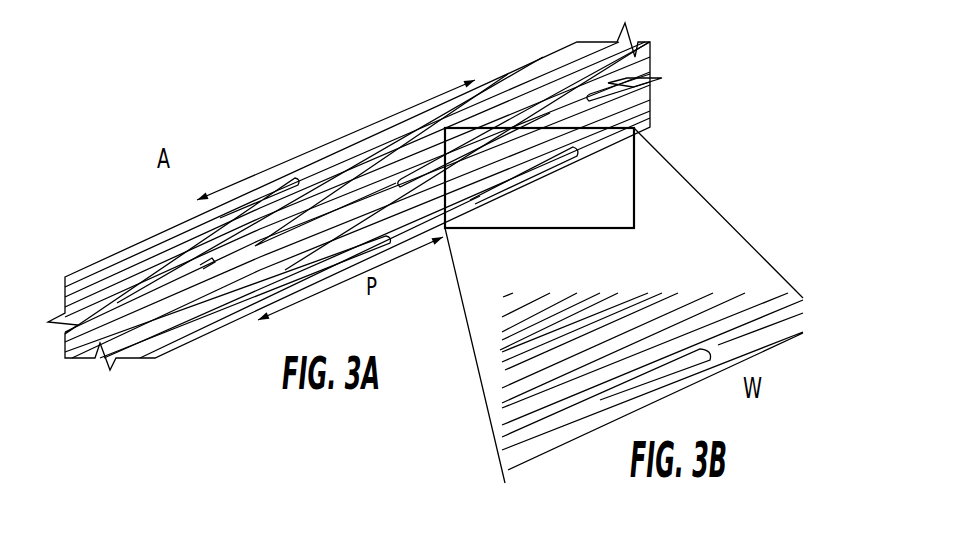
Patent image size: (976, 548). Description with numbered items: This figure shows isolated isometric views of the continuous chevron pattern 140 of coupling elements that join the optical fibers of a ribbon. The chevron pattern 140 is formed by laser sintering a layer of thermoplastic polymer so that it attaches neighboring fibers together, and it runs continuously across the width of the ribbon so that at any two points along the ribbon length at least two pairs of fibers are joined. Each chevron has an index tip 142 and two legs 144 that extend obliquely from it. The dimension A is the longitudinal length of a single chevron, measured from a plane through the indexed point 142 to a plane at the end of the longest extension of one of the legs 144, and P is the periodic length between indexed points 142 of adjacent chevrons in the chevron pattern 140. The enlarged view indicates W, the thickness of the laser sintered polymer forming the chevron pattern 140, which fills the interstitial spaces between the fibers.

The continuous chevron pattern 140 is at (229, 268).
The index tip 142 is at (207, 263).
The legs 144 is at (487, 95).